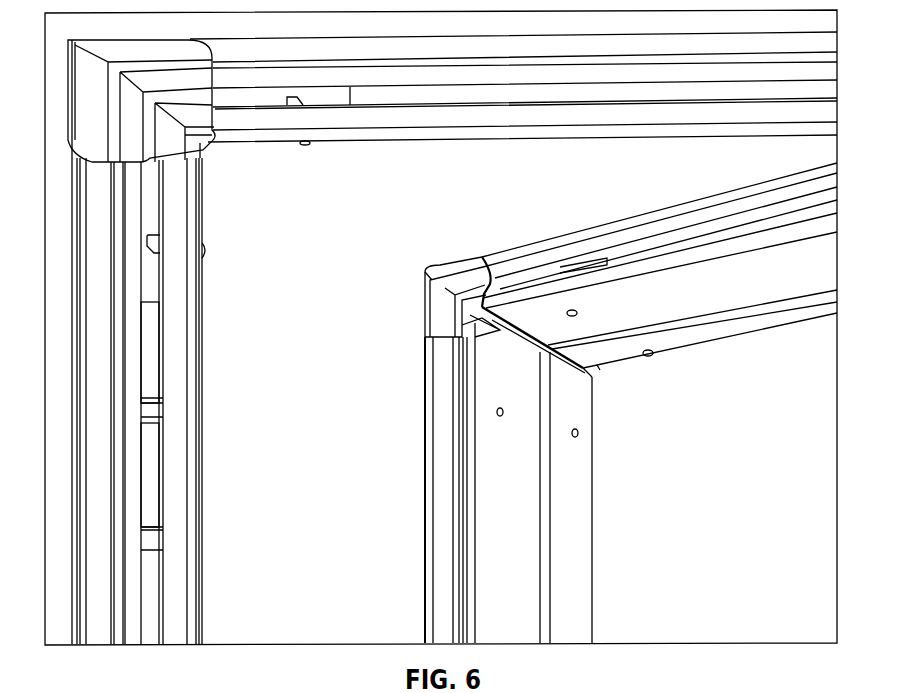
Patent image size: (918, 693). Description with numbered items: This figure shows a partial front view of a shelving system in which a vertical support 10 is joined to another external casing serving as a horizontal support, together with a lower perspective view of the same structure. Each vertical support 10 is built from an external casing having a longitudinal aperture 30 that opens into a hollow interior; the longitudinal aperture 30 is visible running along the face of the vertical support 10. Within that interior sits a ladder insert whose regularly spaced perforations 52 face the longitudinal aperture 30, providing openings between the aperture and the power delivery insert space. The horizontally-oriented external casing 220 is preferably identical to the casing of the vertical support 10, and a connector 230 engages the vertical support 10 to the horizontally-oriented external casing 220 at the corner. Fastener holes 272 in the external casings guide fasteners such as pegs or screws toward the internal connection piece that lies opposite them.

The vertical support 10 is at (203, 612).
The longitudinal aperture 30 is at (165, 648).
The perforations 52 is at (165, 403).
The horizontally-oriented external casing 220 is at (430, 142).
The connector 230 is at (197, 138).
The fastener hole 272 is at (496, 411).